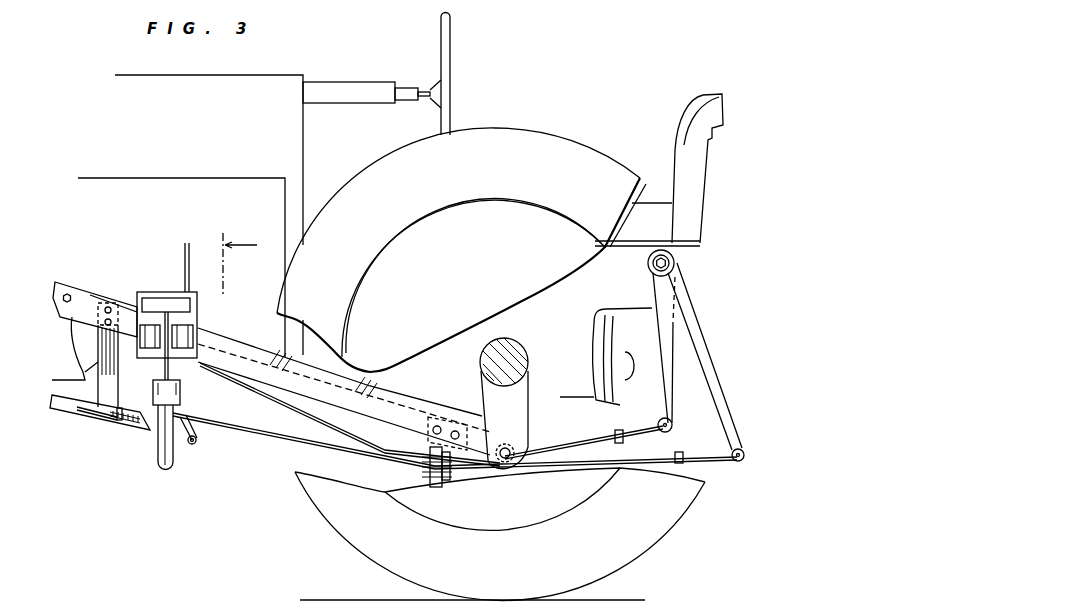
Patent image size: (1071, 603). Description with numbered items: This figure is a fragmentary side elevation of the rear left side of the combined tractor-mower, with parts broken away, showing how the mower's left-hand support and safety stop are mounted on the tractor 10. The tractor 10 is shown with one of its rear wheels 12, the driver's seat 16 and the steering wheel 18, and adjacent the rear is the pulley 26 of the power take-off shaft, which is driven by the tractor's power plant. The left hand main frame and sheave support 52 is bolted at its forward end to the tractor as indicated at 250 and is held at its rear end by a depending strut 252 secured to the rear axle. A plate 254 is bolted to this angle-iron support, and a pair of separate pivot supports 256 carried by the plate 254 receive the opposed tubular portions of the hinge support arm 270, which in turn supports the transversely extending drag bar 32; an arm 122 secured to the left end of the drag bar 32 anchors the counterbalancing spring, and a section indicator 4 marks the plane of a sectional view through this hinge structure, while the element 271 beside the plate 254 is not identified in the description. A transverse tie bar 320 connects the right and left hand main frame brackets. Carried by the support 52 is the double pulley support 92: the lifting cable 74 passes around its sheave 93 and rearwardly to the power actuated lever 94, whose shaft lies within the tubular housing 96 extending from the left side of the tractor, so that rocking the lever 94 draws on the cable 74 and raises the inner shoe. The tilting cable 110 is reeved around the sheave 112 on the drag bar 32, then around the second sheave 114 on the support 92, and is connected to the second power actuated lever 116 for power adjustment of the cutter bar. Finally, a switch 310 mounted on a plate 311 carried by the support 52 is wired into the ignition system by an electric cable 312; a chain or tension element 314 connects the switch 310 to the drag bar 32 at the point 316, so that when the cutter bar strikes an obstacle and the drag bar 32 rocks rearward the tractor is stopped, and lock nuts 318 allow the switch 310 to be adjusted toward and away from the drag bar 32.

The section line 4- 4 is at (240, 259).
The tractor 10 is at (228, 84).
The rear wheels 12 is at (547, 143).
The driver's seat 16 is at (648, 210).
The steering wheel 18 is at (450, 77).
The pulley 26 is at (624, 341).
The drag bar 32 is at (151, 446).
The left hand main frame and sheave support 52 is at (245, 338).
The lifting cable 74 is at (287, 407).
The double pulley support 92 is at (430, 480).
The sheave 93 is at (452, 477).
The power actuated lever 94 is at (667, 382).
The tubular housing 96 is at (676, 266).
The tilting cable 110 is at (338, 442).
The sheave 112 is at (210, 408).
The second sheave 114 is at (428, 450).
The second power actuated lever 116 is at (723, 402).
The arm 122 is at (197, 442).
The bolted forward end connection 250 is at (70, 293).
The depending strut 252 is at (520, 430).
The plate 254 is at (155, 292).
The pivot supports 256 is at (185, 330).
The hinge support arm 270 is at (182, 388).
The cover plate 271 is at (197, 300).
The switch 310 is at (93, 413).
The plate 311 is at (63, 355).
The electric cable 312 is at (63, 357).
The chain or tension element 314 is at (137, 423).
The connection to drag bar 316 is at (152, 420).
The lock nuts 318 is at (120, 417).
The transverse tie bar 320 is at (190, 253).